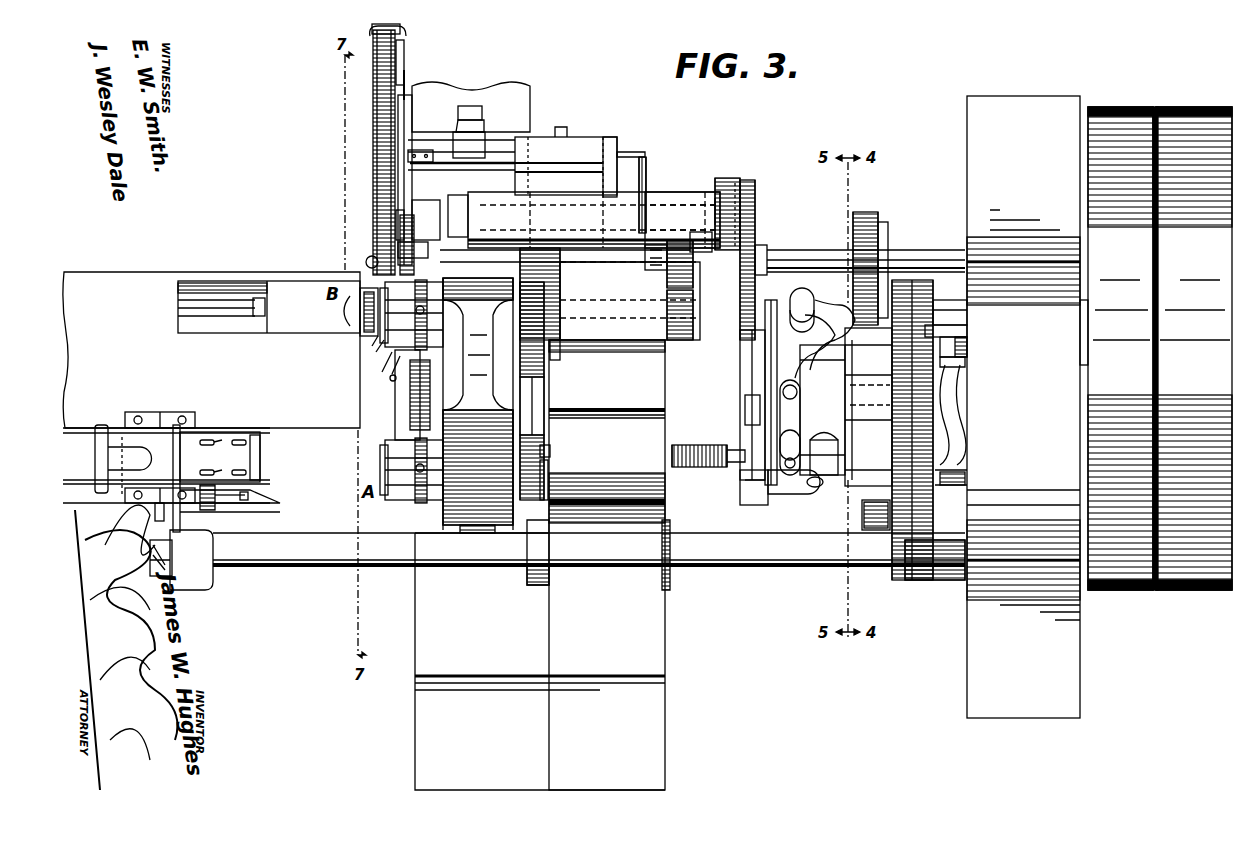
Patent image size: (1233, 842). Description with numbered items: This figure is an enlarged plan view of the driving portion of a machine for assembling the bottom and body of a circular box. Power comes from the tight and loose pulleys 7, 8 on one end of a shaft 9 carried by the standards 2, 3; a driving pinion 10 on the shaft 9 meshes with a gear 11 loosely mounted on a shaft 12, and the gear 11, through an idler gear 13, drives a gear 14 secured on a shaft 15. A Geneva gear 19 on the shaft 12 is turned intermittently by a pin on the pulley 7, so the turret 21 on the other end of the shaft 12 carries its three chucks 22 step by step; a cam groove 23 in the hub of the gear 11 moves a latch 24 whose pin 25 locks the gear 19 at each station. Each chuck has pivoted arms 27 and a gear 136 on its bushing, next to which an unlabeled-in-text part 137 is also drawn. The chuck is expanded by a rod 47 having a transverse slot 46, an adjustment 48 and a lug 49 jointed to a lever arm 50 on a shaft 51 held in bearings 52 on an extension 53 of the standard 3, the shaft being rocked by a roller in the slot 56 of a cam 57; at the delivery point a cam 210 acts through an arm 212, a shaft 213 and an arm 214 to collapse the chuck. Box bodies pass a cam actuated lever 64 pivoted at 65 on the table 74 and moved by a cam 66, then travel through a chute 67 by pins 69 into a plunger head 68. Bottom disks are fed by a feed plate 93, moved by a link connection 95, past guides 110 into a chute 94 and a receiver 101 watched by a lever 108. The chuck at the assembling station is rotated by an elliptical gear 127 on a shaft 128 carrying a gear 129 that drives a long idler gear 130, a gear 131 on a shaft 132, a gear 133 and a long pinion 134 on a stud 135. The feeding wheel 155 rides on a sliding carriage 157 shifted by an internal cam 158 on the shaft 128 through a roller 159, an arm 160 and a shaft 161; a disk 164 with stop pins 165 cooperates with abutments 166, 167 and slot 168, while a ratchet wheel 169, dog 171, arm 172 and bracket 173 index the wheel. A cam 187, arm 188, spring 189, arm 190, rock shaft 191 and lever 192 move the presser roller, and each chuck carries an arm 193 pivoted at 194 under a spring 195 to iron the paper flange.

The standard 2 is at (1023, 407).
The standard 3 is at (542, 565).
The tight pulley 7 is at (1120, 348).
The loose pulley 8 is at (1192, 348).
The shaft 9 is at (950, 330).
The driving pinion 10 is at (945, 318).
The gear 11 is at (940, 478).
The shaft 12 is at (822, 410).
The idler gear 13 is at (862, 510).
The gear 14 is at (925, 580).
The shaft 15 is at (589, 549).
The Geneva gear 19 is at (1088, 362).
The turret 21 is at (478, 405).
The chuck 22 is at (395, 350).
The cam groove 23 is at (955, 400).
The latch 24 is at (965, 370).
The pin 25 is at (960, 347).
The pivoted arm 27 is at (385, 470).
The transverse slot 46 is at (552, 450).
The rod 47 is at (550, 465).
The adjustment 48 is at (700, 467).
The lug 49 is at (760, 495).
The lever arm 50 is at (788, 452).
The shaft 51 is at (790, 398).
The bearings 52 is at (745, 380).
The extension 53 is at (750, 409).
The cam slot 56 is at (805, 300).
The cam 57 is at (770, 300).
The cam actuated lever 64 is at (180, 437).
The pivot 65 is at (158, 518).
The cam 66 is at (190, 590).
The chute 67 is at (220, 457).
The plunger head 68 is at (262, 510).
The pins 69 is at (225, 440).
The table 74 is at (211, 350).
The reciprocating feed plate 93 is at (334, 312).
The chute 94 is at (352, 322).
The link connection 95 is at (230, 300).
The receiver 101 is at (375, 340).
The lever 108 is at (382, 345).
The guides 110 is at (365, 310).
The elliptical gear 127 is at (866, 212).
The shaft 128 is at (866, 261).
The gear 129 is at (765, 245).
The long idler gear 130 is at (693, 285).
The gear 131 is at (712, 335).
The shaft 132 is at (620, 318).
The gear 133 is at (562, 345).
The long pinion 134 is at (560, 290).
The stud 135 is at (603, 246).
The gear 136 is at (552, 435).
The hub 137 is at (544, 395).
The feeding wheel 155 is at (386, 92).
The sliding carriage 157 is at (471, 107).
The internal cam 158 is at (750, 180).
The roller 159 is at (735, 183).
The arm 160 is at (722, 178).
The shaft 161 is at (682, 220).
The disk 164 is at (390, 120).
The stop pins 165 is at (420, 78).
The stop abutment 166 is at (398, 242).
The stop abutment 167 is at (395, 203).
The slot 168 is at (422, 222).
The ratchet wheel 169 is at (420, 95).
The dog 171 is at (440, 90).
The arm 172 is at (461, 155).
The bracket 173 is at (580, 162).
The cam 187 is at (690, 192).
The arm 188 is at (697, 230).
The spring 189 is at (646, 178).
The arm 190 is at (650, 270).
The rock shaft 191 is at (465, 268).
The lever 192 is at (366, 262).
The arm 193 is at (388, 360).
The pivot support 194 is at (396, 366).
The spring 195 is at (398, 382).
The cam 210 is at (838, 310).
The arm 212 is at (855, 375).
The shaft 213 is at (814, 487).
The arm 214 is at (828, 440).